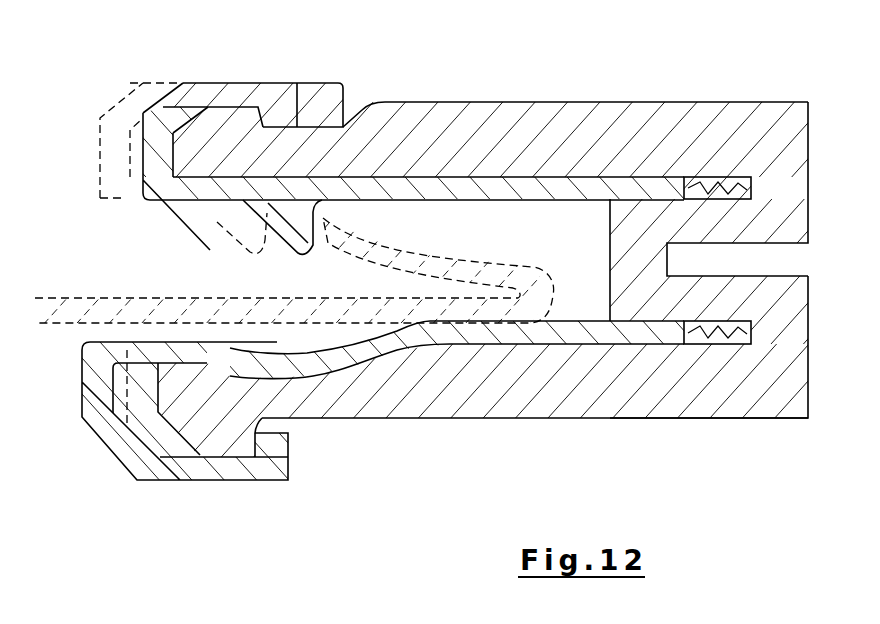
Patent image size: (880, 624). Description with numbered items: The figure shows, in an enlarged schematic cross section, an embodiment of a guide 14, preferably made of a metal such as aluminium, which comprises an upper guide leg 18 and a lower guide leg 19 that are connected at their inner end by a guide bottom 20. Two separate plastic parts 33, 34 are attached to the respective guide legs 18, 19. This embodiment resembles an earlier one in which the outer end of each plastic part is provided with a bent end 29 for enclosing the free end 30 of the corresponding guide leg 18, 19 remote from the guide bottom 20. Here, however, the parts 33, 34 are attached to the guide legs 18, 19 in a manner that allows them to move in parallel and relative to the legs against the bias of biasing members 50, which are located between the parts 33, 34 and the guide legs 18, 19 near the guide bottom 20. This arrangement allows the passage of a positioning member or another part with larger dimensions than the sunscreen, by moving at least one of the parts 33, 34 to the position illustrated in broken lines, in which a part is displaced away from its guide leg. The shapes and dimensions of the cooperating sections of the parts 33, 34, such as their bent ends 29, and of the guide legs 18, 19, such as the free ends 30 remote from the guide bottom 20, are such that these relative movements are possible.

The guide 14 is at (552, 102).
The upper guide leg 18 is at (693, 120).
The lower guide leg 19 is at (597, 409).
The guide bottom 20 is at (787, 384).
The bent end 29 is at (222, 497).
The free end 30 is at (180, 494).
The separate plastic part 33 is at (542, 194).
The separate plastic part 34 is at (570, 333).
The biasing member 50 is at (717, 440).